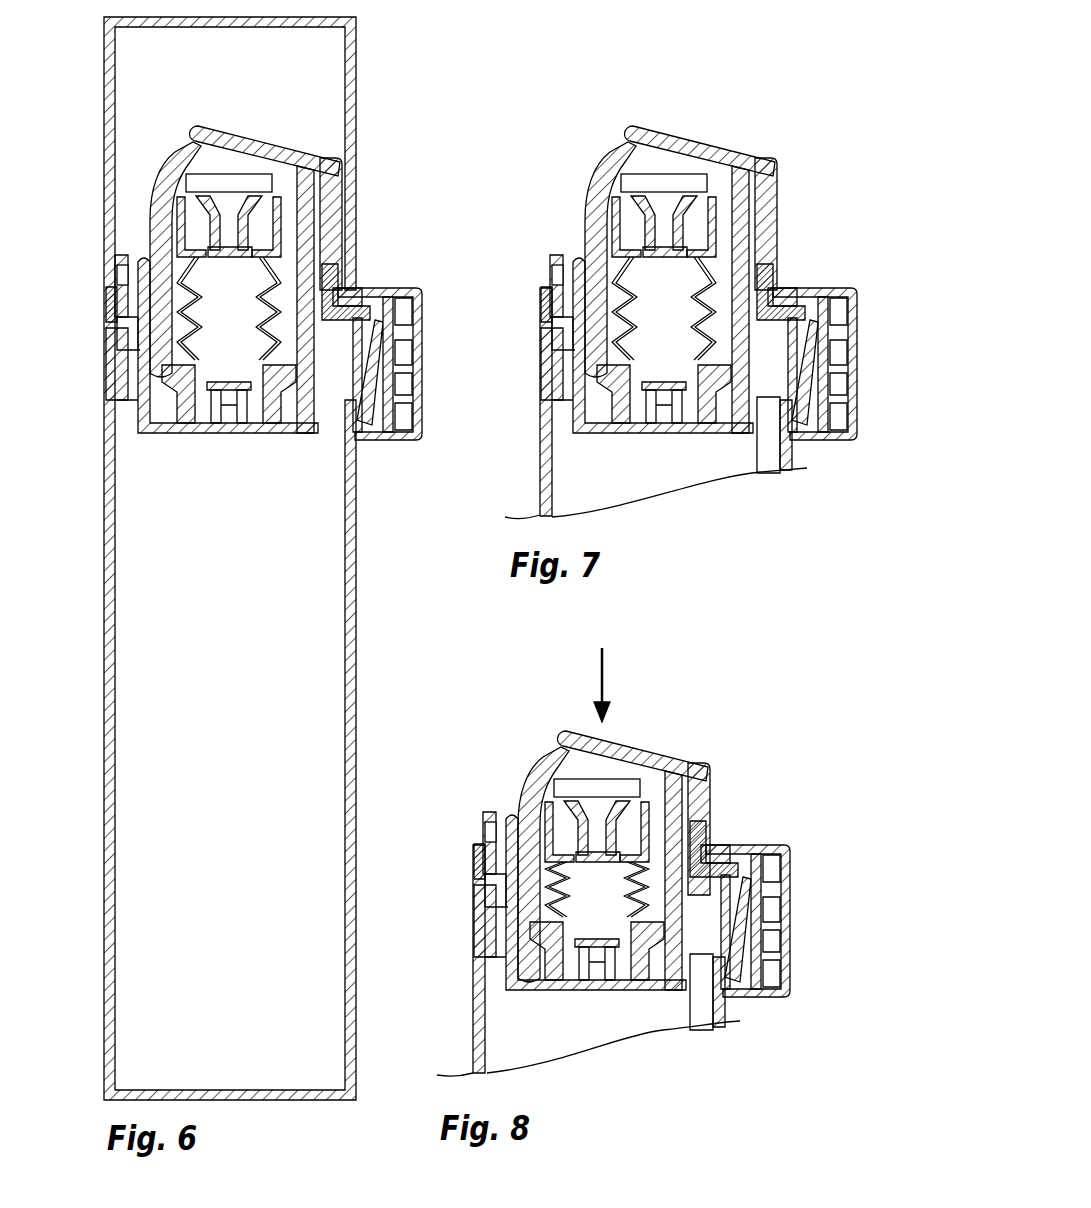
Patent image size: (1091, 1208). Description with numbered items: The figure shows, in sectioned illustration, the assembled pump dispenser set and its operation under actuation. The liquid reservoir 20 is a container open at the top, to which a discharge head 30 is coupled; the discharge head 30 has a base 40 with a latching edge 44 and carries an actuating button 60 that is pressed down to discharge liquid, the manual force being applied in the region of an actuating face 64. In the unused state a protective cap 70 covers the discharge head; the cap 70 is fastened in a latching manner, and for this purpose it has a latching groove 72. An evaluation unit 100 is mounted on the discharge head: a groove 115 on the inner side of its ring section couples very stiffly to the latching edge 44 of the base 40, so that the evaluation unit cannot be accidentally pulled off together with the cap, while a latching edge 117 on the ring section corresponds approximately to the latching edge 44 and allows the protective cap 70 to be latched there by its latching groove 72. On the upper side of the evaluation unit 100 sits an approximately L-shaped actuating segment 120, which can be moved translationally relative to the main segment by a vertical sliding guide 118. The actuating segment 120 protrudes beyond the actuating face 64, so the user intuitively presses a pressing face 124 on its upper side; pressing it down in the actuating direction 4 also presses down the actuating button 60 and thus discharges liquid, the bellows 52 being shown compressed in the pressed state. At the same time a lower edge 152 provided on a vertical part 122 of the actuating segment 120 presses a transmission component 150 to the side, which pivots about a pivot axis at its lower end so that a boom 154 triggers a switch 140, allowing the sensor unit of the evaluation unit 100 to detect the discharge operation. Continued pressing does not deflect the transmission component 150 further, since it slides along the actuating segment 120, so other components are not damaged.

In FIG. 8, the actuating direction 4 is at (605, 663).
In FIG. 6, the liquid reservoir 20 is at (366, 650).
In FIG. 6, the discharge head 30 is at (273, 442).
In FIG. 6, the base 40 is at (112, 393).
In FIG. 6, the latching edge 44 is at (343, 332).
In FIG. 8, the bellows 52 is at (611, 911).
In FIG. 6, the actuating button 60 is at (178, 172).
In FIG. 8, the actuating button 60 is at (530, 780).
In FIG. 6, the actuating face 64 is at (314, 173).
In FIG. 7, the actuating face 64 is at (730, 160).
In FIG. 8, the actuating face 64 is at (662, 757).
In FIG. 6, the protective cap 70 is at (368, 90).
In FIG. 6, the latching groove 72 is at (112, 281).
In FIG. 6, the evaluation unit 100 is at (100, 313).
In FIG. 6, the groove 115 is at (380, 364).
In FIG. 6, the latching edge 117 is at (121, 286).
In FIG. 8, the vertical sliding guide 118 is at (718, 782).
In FIG. 8, the actuating segment 120 is at (560, 740).
In FIG. 7, the vertical part 122 is at (778, 172).
In FIG. 6, the pressing face 124 is at (300, 143).
In FIG. 7, the pressing face 124 is at (665, 130).
In FIG. 8, the pressing face 124 is at (628, 738).
In FIG. 7, the switch 140 is at (812, 330).
In FIG. 8, the switch 140 is at (750, 967).
In FIG. 7, the transmission component 150 is at (760, 405).
In FIG. 8, the transmission component 150 is at (698, 955).
In FIG. 7, the lower edge 152 is at (778, 278).
In FIG. 8, the boom 154 is at (787, 844).